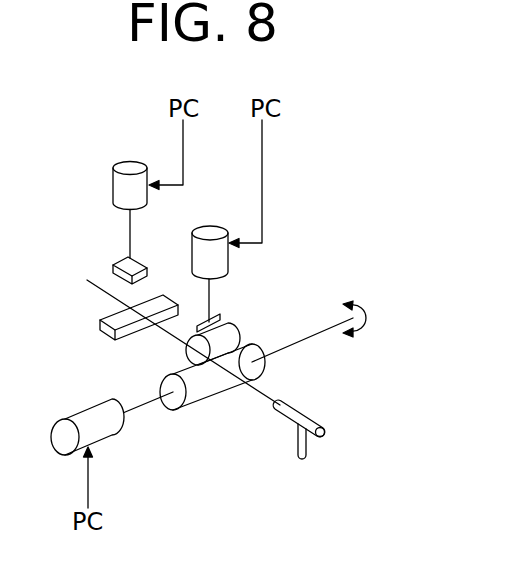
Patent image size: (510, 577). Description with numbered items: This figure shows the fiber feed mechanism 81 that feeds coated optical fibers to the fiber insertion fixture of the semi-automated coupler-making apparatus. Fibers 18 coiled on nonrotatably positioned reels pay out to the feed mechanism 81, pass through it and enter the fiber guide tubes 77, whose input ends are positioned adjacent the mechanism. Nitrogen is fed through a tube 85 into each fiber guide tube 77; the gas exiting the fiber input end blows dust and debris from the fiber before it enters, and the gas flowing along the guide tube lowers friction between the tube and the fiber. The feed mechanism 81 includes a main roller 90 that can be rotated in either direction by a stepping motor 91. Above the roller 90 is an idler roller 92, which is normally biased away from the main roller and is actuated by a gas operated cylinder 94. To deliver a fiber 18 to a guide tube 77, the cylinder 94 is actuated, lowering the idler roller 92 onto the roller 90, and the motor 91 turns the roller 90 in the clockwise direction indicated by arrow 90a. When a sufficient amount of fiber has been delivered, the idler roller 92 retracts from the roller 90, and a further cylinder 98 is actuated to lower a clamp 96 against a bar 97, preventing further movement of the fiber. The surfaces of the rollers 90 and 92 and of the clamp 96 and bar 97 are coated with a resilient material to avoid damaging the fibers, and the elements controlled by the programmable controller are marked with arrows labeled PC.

The cylinder 98 is at (127, 190).
The clamp 96 is at (113, 265).
The bar 97 is at (117, 319).
The fiber 18 is at (170, 338).
The gas operated cylinder 94 is at (218, 259).
The idler roller 92 is at (232, 348).
The roller 90 is at (211, 386).
The arrow 90a is at (368, 318).
The stepping motor 91 is at (100, 428).
The fiber feed mechanism 81 is at (287, 281).
The fiber guide tube 77 is at (303, 406).
The tube 85 is at (297, 448).